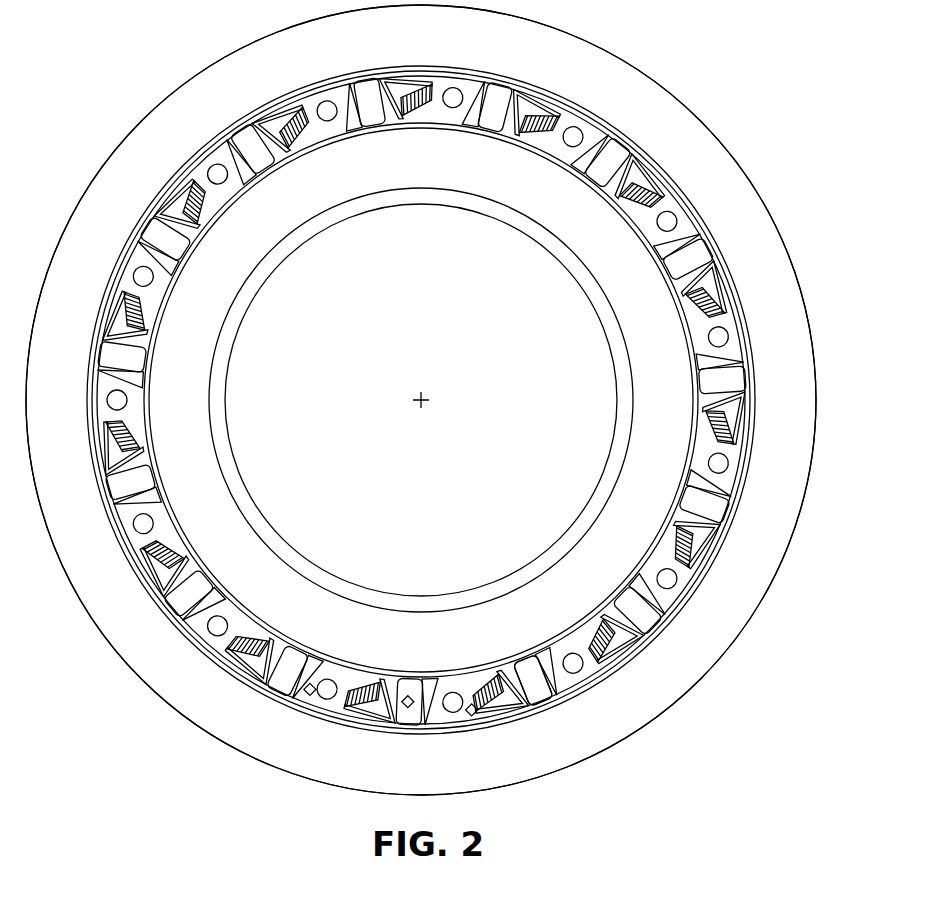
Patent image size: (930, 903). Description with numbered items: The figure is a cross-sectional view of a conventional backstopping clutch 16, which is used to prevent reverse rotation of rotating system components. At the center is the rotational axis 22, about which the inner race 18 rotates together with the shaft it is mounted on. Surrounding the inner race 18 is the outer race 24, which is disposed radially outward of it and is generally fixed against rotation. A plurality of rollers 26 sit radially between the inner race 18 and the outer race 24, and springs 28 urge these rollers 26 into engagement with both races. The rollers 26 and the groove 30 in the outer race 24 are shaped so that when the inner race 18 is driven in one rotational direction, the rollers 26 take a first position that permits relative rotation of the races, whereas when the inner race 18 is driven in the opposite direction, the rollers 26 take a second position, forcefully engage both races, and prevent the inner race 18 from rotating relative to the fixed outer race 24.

The backstopping clutch 16 is at (681, 99).
The inner race 18 is at (593, 592).
The rotational axis 22 is at (428, 397).
The outer race 24 is at (722, 598).
The rollers 26 is at (540, 687).
The springs 28 is at (520, 712).
The groove 30 is at (167, 182).